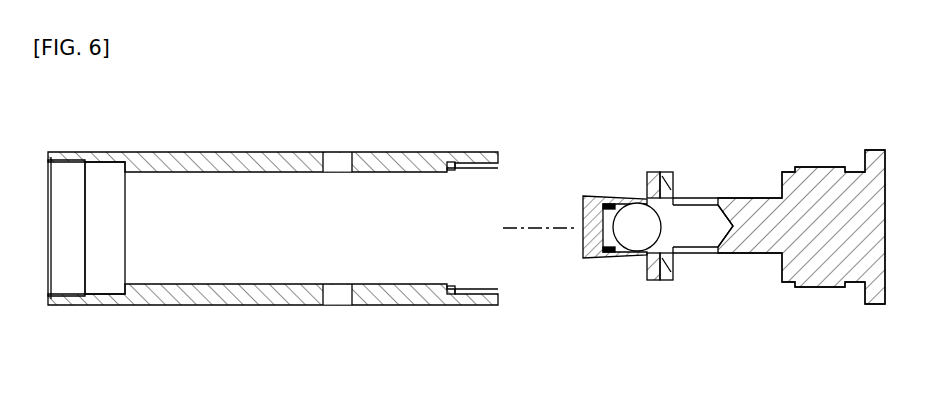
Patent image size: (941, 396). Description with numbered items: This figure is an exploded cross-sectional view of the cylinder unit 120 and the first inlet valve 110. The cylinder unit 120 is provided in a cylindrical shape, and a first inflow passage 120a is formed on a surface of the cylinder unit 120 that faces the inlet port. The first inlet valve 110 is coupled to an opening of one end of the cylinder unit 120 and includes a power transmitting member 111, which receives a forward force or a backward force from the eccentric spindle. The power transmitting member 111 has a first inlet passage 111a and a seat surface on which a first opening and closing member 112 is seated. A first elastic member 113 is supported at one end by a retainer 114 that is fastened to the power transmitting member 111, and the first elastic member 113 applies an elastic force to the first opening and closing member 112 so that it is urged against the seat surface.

The first inlet valve 110 is at (694, 246).
The power transmitting member 111 is at (776, 230).
The first inlet passage 111a is at (695, 254).
The first opening and closing member 112 is at (651, 220).
The first elastic member 113 is at (620, 200).
The retainer 114 is at (588, 196).
The cylinder unit 120 is at (248, 305).
The first inflow passage 120a is at (338, 165).